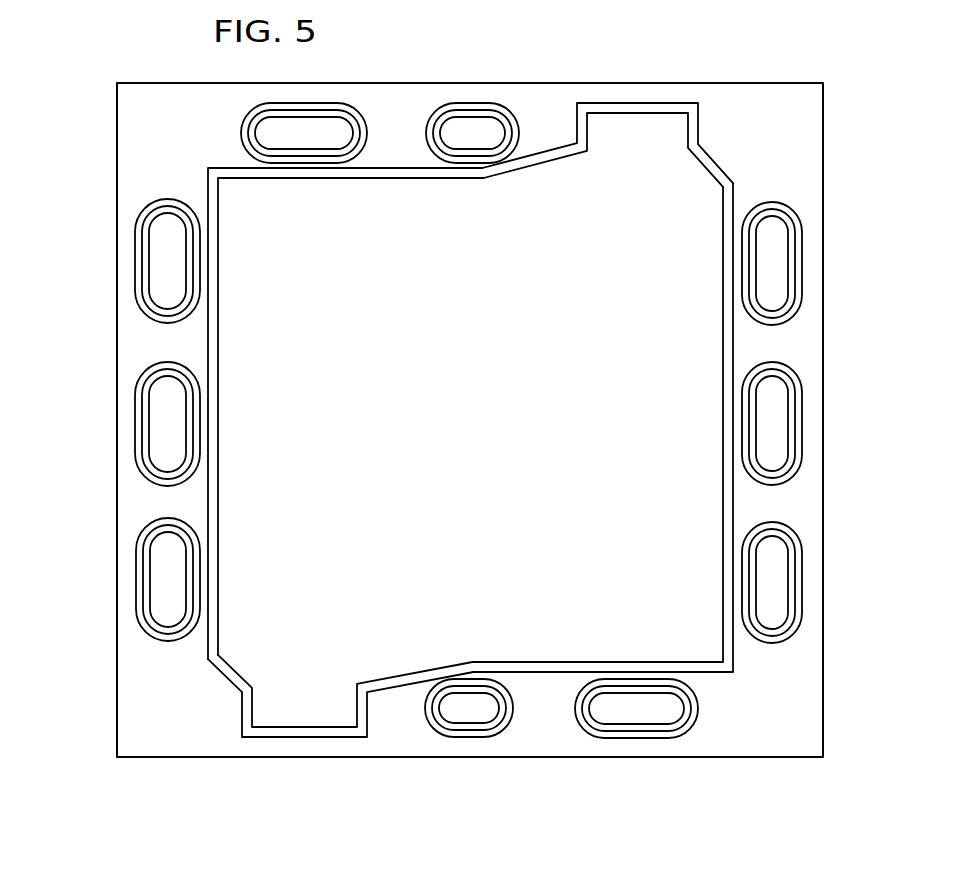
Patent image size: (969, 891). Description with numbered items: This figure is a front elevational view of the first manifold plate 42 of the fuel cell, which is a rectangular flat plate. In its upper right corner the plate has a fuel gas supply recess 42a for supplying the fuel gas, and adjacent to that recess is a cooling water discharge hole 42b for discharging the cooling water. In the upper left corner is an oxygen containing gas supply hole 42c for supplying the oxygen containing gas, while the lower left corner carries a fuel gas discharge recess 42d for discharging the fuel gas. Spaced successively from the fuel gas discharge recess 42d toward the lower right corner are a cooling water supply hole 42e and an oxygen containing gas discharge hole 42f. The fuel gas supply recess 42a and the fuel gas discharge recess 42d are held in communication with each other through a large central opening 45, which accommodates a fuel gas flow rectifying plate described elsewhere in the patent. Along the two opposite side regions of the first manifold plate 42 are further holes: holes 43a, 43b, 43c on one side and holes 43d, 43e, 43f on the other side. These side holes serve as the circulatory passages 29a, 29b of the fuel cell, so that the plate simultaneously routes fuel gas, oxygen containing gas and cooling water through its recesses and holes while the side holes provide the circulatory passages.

The first manifold plate 42 is at (499, 77).
The fuel gas supply recess 42a is at (628, 135).
The cooling water discharge hole 42b is at (480, 137).
The oxygen containing gas supply hole 42c is at (305, 138).
The fuel gas discharge recess 42d is at (302, 707).
The cooling water supply hole 42e is at (480, 713).
The oxygen containing gas discharge hole 42f is at (638, 710).
The hole 43a is at (816, 263).
The hole 43b is at (773, 418).
The hole 43c is at (777, 580).
The hole 43d is at (117, 270).
The hole 43e is at (165, 423).
The hole 43f is at (168, 572).
The circulatory passage 29a is at (801, 292).
The circulatory passage 29b is at (139, 295).
The opening 45 is at (488, 442).